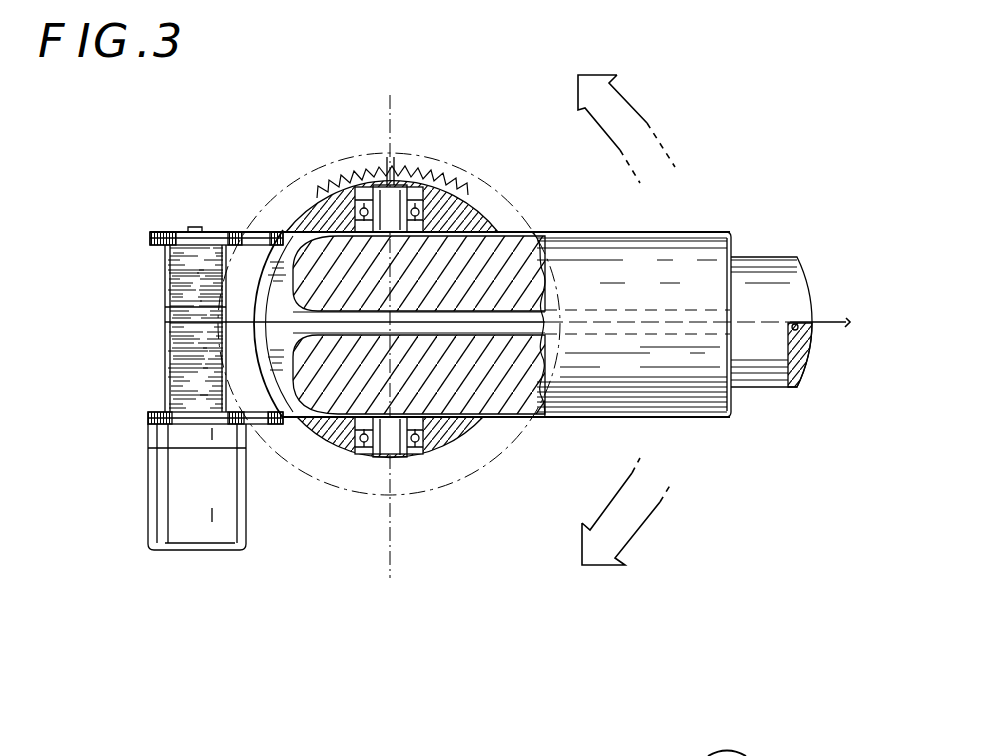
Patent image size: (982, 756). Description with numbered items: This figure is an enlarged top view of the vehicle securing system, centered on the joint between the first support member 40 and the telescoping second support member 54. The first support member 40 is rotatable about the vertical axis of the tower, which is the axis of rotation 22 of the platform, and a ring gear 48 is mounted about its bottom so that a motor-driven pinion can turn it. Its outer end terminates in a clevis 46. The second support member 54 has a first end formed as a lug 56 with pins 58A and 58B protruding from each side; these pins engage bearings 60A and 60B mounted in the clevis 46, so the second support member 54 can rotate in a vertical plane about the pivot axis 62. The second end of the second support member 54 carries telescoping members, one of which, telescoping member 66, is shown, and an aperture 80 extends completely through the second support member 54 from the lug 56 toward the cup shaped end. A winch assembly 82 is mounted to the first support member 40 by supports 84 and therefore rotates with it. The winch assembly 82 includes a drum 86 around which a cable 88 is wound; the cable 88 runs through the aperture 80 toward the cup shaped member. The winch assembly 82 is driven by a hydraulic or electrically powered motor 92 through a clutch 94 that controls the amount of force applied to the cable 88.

The axis of rotation 22 is at (392, 238).
The first support member 40 is at (480, 440).
The clevis 46 is at (492, 232).
The ring gear 48 is at (450, 163).
The telescoping second support member 54 is at (600, 232).
The lug 56 is at (284, 229).
The pin 58A is at (397, 185).
The pin 58B is at (378, 458).
The bearing 60A is at (362, 195).
The bearing 60B is at (367, 458).
The pivot axis 62 is at (390, 553).
The telescoping member 66 is at (766, 257).
The aperture 80 is at (483, 328).
The winch assembly 82 is at (156, 216).
The supports 84 is at (258, 231).
The drum 86 is at (165, 377).
The cable 88 is at (840, 320).
The motor 92 is at (210, 553).
The clutch 94 is at (148, 432).